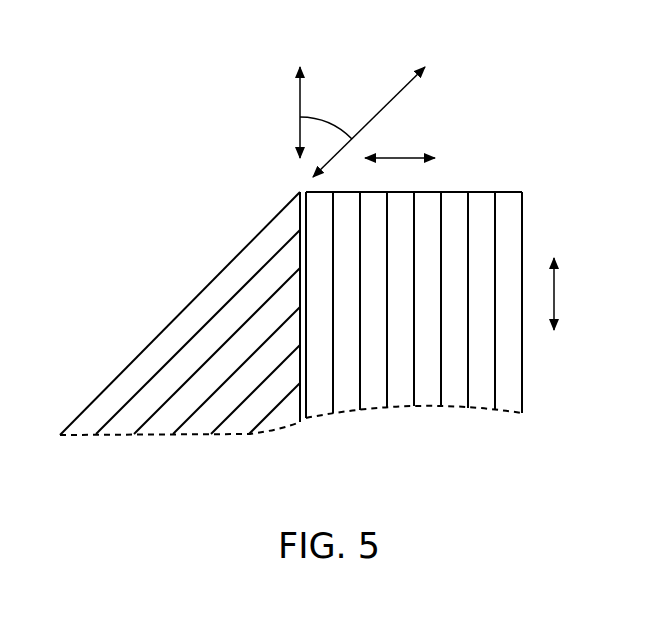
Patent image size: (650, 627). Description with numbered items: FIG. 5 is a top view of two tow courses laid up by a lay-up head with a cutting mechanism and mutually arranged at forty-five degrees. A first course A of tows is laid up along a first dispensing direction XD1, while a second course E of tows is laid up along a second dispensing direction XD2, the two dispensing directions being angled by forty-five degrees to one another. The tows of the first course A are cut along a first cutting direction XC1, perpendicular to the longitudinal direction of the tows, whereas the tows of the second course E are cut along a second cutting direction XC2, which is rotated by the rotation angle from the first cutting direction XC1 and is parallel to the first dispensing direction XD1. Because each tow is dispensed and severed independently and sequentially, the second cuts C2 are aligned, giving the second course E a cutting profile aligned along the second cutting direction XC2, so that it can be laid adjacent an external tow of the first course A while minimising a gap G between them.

The first course A is at (428, 435).
The second cut C2 is at (222, 470).
The second course E is at (150, 463).
The gap G is at (302, 422).
The second cutting direction XC2 is at (276, 112).
The second dispensing direction XD2 is at (395, 92).
The first cutting direction XC1 is at (400, 138).
The first dispensing direction XD1 is at (581, 294).